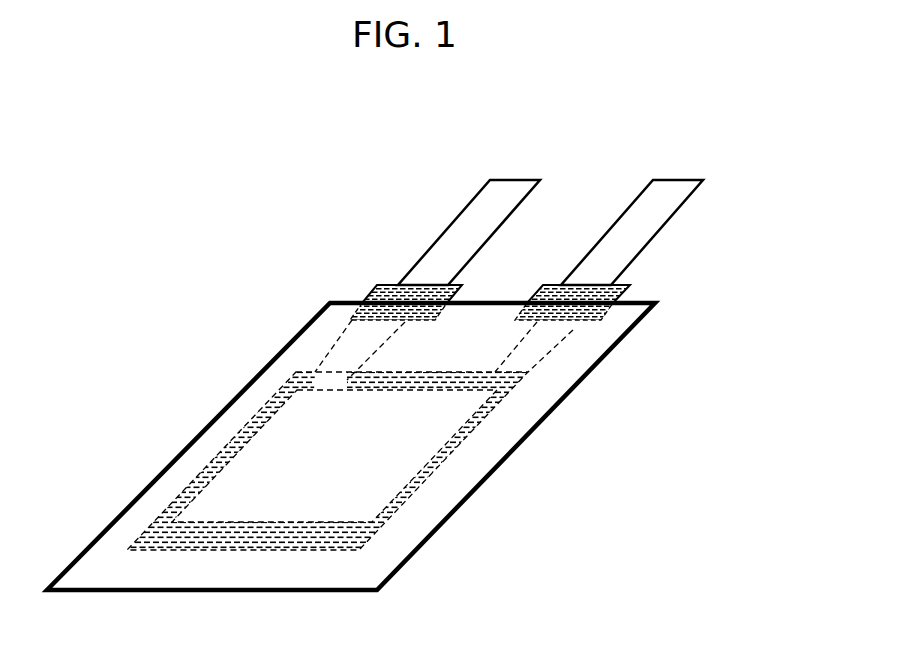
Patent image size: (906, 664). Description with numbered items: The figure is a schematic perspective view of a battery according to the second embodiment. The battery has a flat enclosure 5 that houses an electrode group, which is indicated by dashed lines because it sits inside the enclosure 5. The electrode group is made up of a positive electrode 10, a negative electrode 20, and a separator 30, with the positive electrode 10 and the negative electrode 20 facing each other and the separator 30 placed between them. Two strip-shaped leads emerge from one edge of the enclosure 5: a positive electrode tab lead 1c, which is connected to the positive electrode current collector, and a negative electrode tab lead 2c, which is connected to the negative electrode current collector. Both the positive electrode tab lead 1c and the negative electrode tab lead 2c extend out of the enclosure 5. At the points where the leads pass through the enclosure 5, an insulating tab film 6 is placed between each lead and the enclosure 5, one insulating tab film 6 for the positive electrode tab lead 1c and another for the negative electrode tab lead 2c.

The enclosure 5 is at (153, 481).
The insulating tab film 6 is at (375, 287).
The positive electrode 10 is at (288, 447).
The negative electrode 20 is at (447, 462).
The separator 30 is at (278, 552).
The positive electrode tab lead 1c is at (455, 217).
The negative electrode tab lead 2c is at (663, 223).